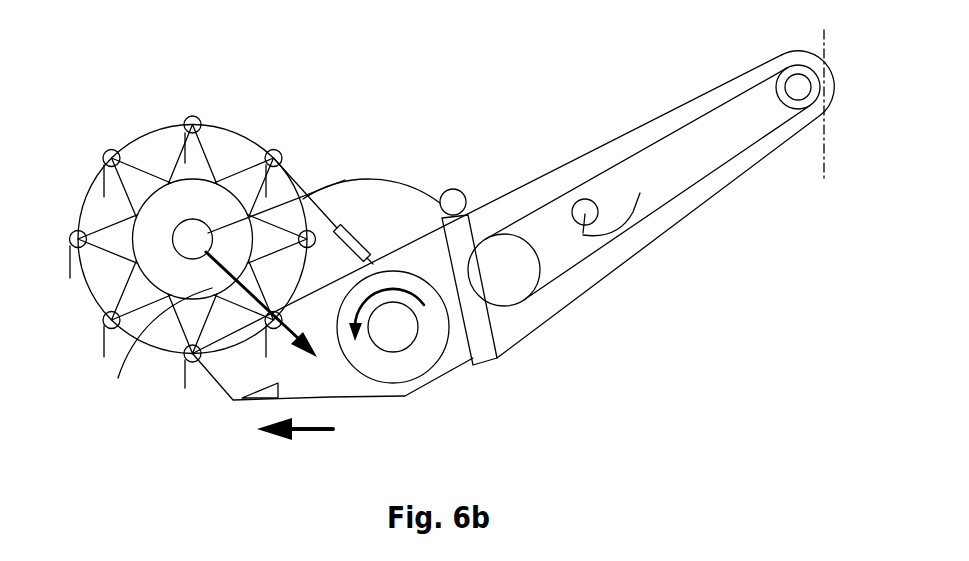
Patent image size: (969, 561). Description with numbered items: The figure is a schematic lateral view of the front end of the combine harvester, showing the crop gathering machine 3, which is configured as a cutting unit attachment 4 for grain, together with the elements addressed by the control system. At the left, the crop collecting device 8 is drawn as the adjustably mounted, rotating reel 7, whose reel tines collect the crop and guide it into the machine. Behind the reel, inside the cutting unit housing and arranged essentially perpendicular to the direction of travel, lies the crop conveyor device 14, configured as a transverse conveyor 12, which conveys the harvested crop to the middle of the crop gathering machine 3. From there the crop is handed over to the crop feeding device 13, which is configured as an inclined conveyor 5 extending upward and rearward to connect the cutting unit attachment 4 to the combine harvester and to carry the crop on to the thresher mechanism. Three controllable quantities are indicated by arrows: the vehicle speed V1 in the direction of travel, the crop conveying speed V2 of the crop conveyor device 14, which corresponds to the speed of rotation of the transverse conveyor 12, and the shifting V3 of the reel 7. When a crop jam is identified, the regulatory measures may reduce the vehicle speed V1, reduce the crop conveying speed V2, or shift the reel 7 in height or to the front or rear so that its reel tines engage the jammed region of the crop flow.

The crop gathering machine 3 is at (452, 238).
The cutting unit attachment 4 is at (507, 100).
The reel 7 is at (197, 225).
The crop collecting device 8 is at (193, 197).
The inclined conveyor 5 is at (651, 204).
The crop feeding device 13 is at (557, 247).
The transverse conveyor 12 is at (423, 356).
The crop conveyor device 14 is at (398, 332).
The vehicle speed V1 is at (373, 468).
The crop conveying speed V2 is at (397, 288).
The shifting of the reel V3 is at (215, 327).